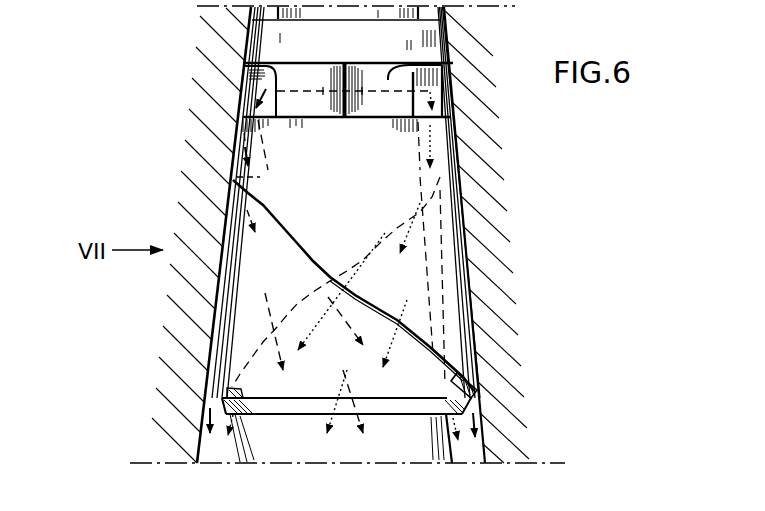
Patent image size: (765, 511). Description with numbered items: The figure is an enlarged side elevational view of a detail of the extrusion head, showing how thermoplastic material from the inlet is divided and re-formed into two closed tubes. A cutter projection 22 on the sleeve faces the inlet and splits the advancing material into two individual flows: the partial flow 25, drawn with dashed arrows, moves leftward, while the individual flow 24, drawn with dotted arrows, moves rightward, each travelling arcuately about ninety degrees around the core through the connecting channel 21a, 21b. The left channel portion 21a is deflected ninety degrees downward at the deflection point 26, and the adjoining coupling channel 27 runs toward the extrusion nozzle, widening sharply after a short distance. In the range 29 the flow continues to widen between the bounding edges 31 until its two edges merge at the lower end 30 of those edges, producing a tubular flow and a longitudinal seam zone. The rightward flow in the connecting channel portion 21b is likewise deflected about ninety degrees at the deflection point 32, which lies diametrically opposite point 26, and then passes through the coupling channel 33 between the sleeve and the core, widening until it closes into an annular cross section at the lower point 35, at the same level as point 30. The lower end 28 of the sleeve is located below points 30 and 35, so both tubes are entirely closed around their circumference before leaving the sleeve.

The channel portion of the connecting channel 21a is at (283, 72).
The connecting channel portion 21b is at (390, 78).
The cutter projection 22 is at (347, 91).
The individual flow 24 is at (440, 77).
The partial flow 25 is at (305, 91).
The deflection point 26 is at (255, 93).
The coupling channel 27 is at (236, 145).
The lower end of the sleeve 28 is at (403, 415).
The range 29 is at (253, 278).
The lower end of the bounding edges 30 is at (477, 398).
The bounding edges 31 is at (430, 342).
The deflection point 32 is at (440, 97).
The coupling channel 33 is at (440, 155).
The lower point of the bounding edges 35 is at (237, 387).